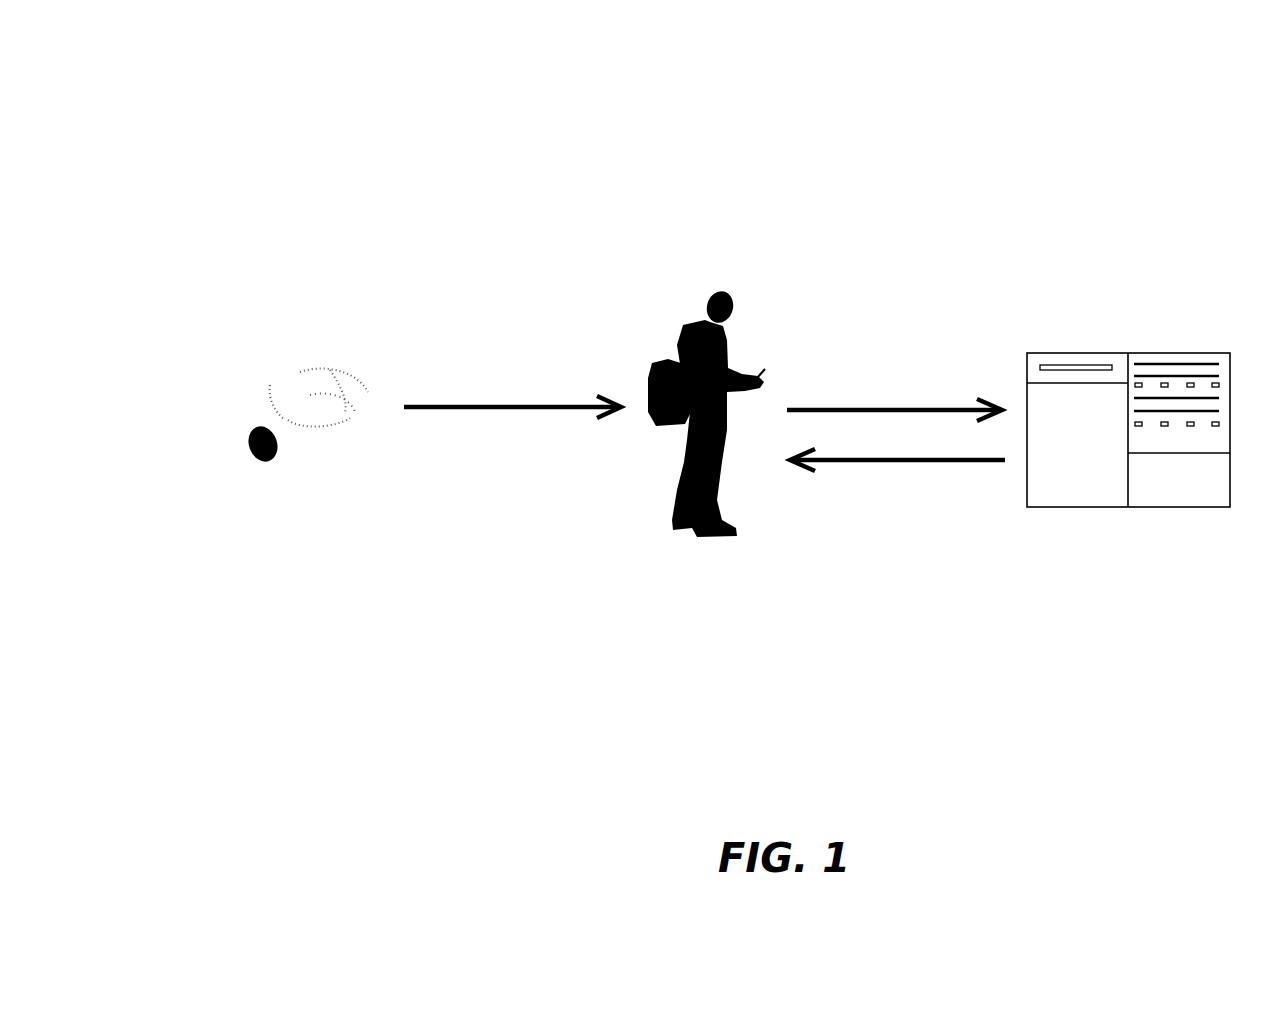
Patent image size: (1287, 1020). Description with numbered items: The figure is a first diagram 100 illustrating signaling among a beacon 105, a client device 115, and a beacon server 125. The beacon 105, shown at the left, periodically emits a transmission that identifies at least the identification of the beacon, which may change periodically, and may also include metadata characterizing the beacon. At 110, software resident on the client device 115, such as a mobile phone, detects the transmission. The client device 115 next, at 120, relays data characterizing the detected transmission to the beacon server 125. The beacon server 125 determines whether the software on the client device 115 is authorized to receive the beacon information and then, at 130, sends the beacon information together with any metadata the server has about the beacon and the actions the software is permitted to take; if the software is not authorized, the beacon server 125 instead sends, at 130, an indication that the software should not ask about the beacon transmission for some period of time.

The first diagram 100 is at (303, 110).
The beacon 105 is at (322, 447).
The detection of the transmission 110 is at (516, 391).
The client device 115 is at (760, 373).
The relaying of data 120 is at (884, 394).
The beacon server 125 is at (1117, 507).
The sending of beacon information 130 is at (899, 506).